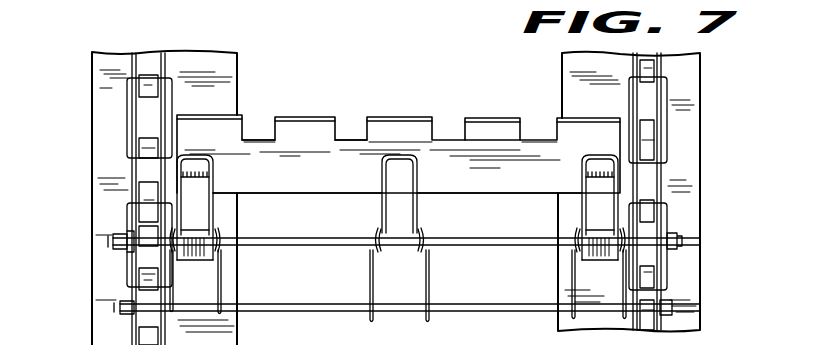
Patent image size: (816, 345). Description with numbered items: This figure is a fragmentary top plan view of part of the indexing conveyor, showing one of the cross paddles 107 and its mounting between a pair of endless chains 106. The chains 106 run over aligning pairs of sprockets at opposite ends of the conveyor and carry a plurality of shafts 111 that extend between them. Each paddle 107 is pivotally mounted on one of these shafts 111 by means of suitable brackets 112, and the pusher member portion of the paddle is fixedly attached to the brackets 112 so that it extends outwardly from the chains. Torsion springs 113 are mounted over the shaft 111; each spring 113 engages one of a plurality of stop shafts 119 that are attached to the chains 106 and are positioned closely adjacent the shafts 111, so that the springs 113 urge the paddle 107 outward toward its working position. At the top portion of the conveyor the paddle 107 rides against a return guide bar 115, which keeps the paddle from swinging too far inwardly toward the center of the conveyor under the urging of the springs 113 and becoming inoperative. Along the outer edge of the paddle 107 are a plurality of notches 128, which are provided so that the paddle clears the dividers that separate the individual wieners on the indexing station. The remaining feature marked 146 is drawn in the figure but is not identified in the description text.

The endless chain 106 is at (130, 112).
The cross paddle 107 is at (548, 198).
The shaft 111 is at (272, 240).
The bracket 112 is at (202, 220).
The torsion spring 113 is at (215, 182).
The return guide bar 115 is at (210, 86).
The stop shaft 119 is at (328, 306).
The notch 128 is at (262, 112).
The notch 146 is at (348, 130).